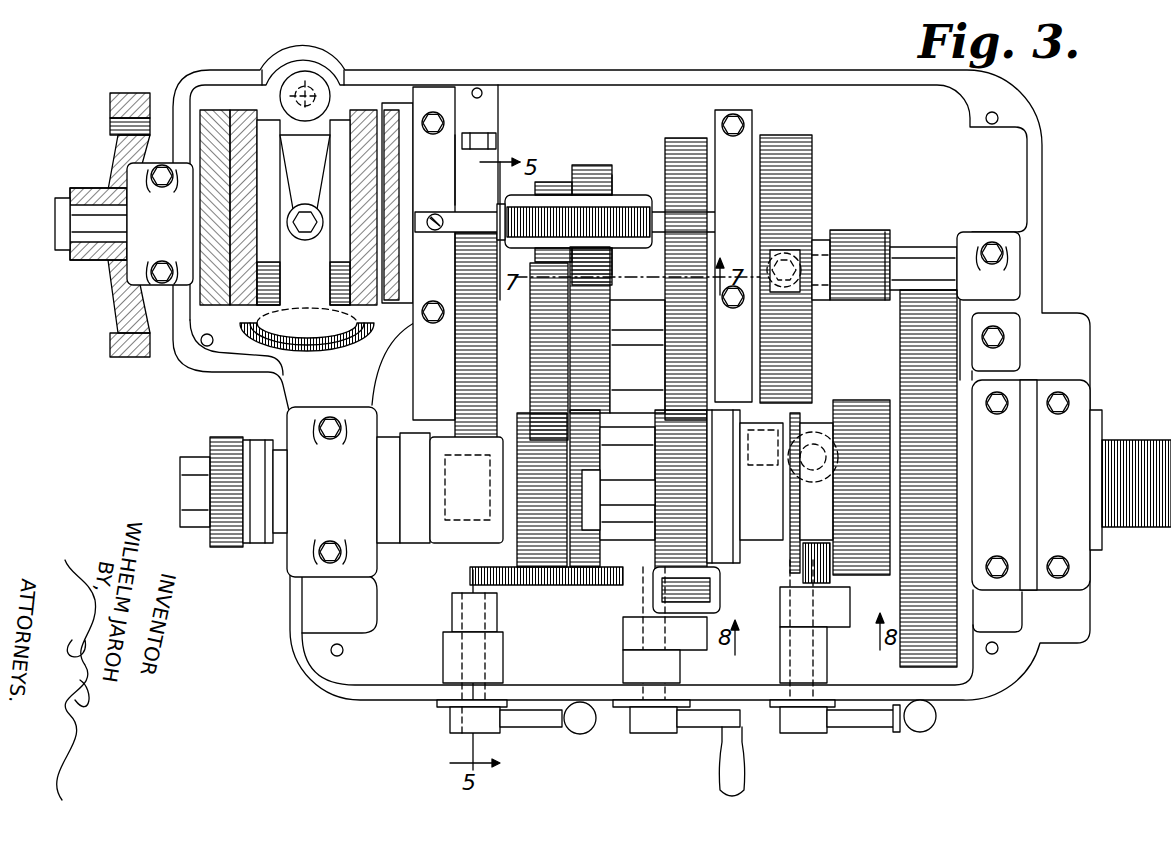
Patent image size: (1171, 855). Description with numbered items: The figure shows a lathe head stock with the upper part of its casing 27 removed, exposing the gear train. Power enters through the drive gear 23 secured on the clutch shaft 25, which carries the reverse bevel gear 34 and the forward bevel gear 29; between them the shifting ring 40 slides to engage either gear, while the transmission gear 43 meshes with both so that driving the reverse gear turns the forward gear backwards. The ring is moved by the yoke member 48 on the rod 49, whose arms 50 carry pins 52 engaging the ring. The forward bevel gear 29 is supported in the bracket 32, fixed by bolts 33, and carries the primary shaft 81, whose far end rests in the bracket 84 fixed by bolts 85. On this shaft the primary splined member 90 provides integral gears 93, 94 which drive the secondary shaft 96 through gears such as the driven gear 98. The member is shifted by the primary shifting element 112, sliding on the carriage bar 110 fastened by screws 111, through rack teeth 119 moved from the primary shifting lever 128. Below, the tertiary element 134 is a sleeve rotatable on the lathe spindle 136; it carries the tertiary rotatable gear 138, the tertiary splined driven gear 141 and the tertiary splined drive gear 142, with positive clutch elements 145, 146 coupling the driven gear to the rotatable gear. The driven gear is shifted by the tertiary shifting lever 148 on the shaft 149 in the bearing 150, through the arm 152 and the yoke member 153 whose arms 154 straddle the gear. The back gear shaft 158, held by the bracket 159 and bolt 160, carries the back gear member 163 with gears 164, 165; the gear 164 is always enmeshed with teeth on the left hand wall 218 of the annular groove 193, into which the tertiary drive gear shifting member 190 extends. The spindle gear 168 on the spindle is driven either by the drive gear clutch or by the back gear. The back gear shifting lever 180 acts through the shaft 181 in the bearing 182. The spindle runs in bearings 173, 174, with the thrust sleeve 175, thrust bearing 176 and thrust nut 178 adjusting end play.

The drive gear 23 is at (110, 107).
The clutch shaft 25 is at (95, 228).
The casing 27 is at (205, 360).
The forward bevel gear 29 is at (400, 148).
The bracket 32 is at (437, 180).
The bolts 33 is at (480, 135).
The reverse bevel gear 34 is at (245, 213).
The shifting ring 40 is at (320, 340).
The transmission gear 43 is at (362, 295).
The yoke member 48 is at (392, 78).
The rod 49 is at (312, 90).
The arms 50 is at (300, 135).
The pins 52 is at (233, 290).
The primary shaft 81 is at (476, 212).
The bracket 84 is at (792, 140).
The bolts 85 is at (780, 135).
The primary splined member 90 is at (607, 178).
The gear 93 is at (608, 193).
The gear 94 is at (545, 188).
The secondary shaft 96 is at (645, 350).
The driven gear 98 is at (470, 370).
The carriage bar 110 is at (666, 228).
The screws 111 is at (787, 202).
The primary shifting element 112 is at (545, 215).
The rack teeth 119 is at (585, 220).
The primary shifting lever 128 is at (575, 727).
The tertiary element 134 is at (622, 485).
The lathe spindle 136 is at (215, 522).
The tertiary rotatable gear 138 is at (540, 500).
The tertiary splined driven gear 141 is at (675, 500).
The tertiary splined drive gear 142 is at (1000, 305).
The positive clutch element 145 is at (660, 466).
The positive clutch element 146 is at (582, 552).
The tertiary shifting lever 148 is at (702, 722).
The shaft 149 is at (622, 712).
The bearing 150 is at (630, 662).
The arm 152 is at (628, 637).
The yoke member 153 is at (648, 598).
The arms 154 is at (735, 592).
The back gear shaft 158 is at (892, 265).
The bracket 159 is at (1000, 270).
The bolt 160 is at (1010, 335).
The back gear member 163 is at (797, 216).
The gear 164 is at (812, 230).
The gear 165 is at (887, 238).
The spindle gear 168 is at (972, 683).
The bearing 173 is at (1096, 552).
The bearing 174 is at (278, 582).
The thrust sleeve 175 is at (470, 560).
The thrust bearing 176 is at (332, 510).
The thrust nut 178 is at (262, 548).
The back gear shifting lever 180 is at (915, 727).
The shaft 181 is at (827, 740).
The bearing 182 is at (778, 656).
The tertiary drive gear shifting member 190 is at (833, 578).
The annular groove 193 is at (838, 400).
The left hand wall 218 is at (700, 585).